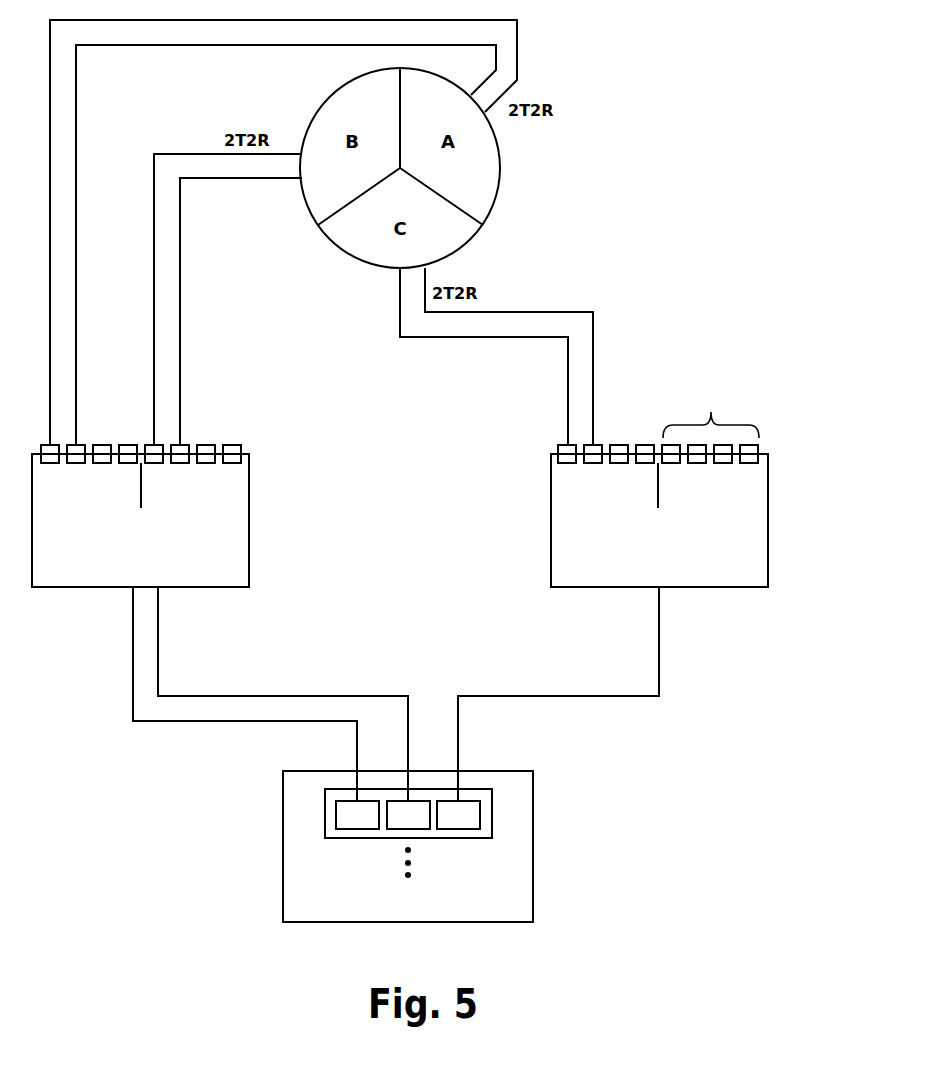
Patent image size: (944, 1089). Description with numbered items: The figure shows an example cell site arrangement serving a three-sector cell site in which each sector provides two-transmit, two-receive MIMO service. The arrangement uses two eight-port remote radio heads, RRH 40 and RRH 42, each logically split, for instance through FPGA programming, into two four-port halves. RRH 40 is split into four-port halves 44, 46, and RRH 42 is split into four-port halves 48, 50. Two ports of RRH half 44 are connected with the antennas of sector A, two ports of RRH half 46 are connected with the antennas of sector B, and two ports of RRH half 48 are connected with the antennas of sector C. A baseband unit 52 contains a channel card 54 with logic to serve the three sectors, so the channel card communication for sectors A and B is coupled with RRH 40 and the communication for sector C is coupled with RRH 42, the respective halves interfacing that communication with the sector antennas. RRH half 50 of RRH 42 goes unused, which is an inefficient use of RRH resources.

The eight-port RRH 40 is at (161, 516).
The eight-port RRH 42 is at (679, 475).
The four-port half 44 is at (89, 473).
The four-port half 46 is at (193, 473).
The four-port half 48 is at (606, 473).
The four-port half 50 is at (710, 473).
The baseband unit 52 is at (429, 846).
The channel card 54 is at (325, 805).